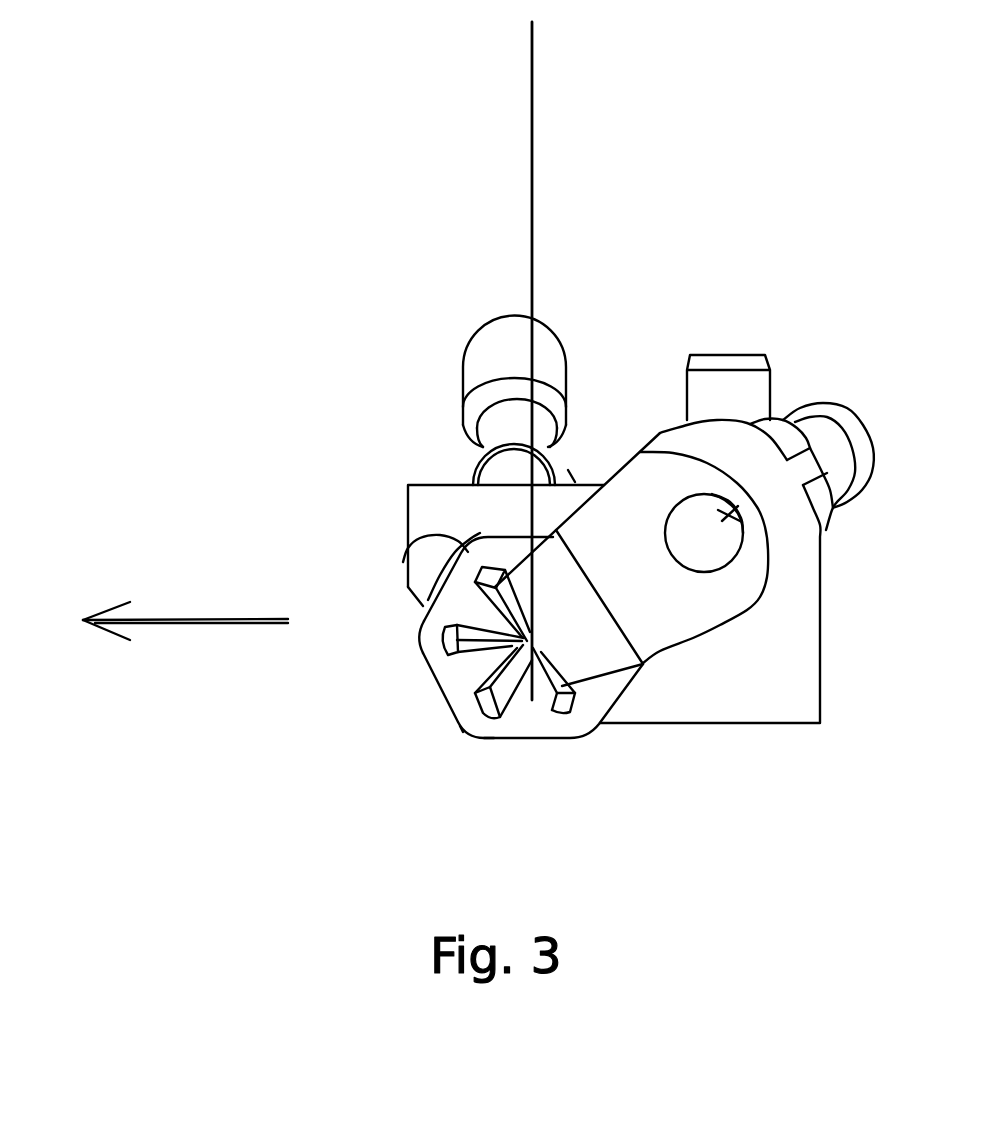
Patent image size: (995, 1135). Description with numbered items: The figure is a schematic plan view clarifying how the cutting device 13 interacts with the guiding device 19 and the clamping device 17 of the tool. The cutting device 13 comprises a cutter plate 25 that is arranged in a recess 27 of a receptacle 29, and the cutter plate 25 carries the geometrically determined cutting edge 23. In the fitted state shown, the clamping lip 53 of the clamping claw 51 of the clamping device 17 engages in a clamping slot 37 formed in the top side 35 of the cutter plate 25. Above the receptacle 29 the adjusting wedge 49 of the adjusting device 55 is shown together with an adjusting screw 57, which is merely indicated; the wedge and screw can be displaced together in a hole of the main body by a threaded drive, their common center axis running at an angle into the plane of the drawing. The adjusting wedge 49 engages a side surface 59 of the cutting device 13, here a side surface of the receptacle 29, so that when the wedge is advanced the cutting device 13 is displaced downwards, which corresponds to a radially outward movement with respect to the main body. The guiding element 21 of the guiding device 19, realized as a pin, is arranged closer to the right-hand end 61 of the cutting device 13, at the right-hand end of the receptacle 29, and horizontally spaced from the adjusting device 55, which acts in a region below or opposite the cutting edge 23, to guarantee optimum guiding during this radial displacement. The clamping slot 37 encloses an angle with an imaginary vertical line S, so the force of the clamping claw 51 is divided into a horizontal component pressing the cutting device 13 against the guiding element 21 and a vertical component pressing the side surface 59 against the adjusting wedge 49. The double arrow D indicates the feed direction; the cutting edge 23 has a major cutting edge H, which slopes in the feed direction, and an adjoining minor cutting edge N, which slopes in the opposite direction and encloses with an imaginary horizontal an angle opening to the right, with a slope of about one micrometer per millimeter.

The cutting device 13 is at (396, 573).
The clamping device 17 is at (813, 394).
The guiding device 19 is at (759, 344).
The guiding element 21 is at (710, 380).
The cutting edge 23 is at (467, 740).
The cutter plate 25 is at (422, 667).
The recess 27 is at (437, 538).
The receptacle 29 is at (420, 503).
The top side 35 is at (529, 725).
The clamping slot 37 is at (573, 707).
The adjusting wedge 49 is at (512, 462).
The clamping claw 51 is at (733, 607).
The clamping lip 53 is at (580, 690).
The adjusting device 55 is at (555, 324).
The adjusting screw 57 is at (470, 358).
The side surface 59 is at (578, 482).
The right-hand end 61 is at (820, 682).
The imaginary vertical line S is at (534, 44).
The double arrow / feed direction D is at (213, 625).
The major cutting edge H is at (463, 727).
The minor cutting edge N is at (483, 740).